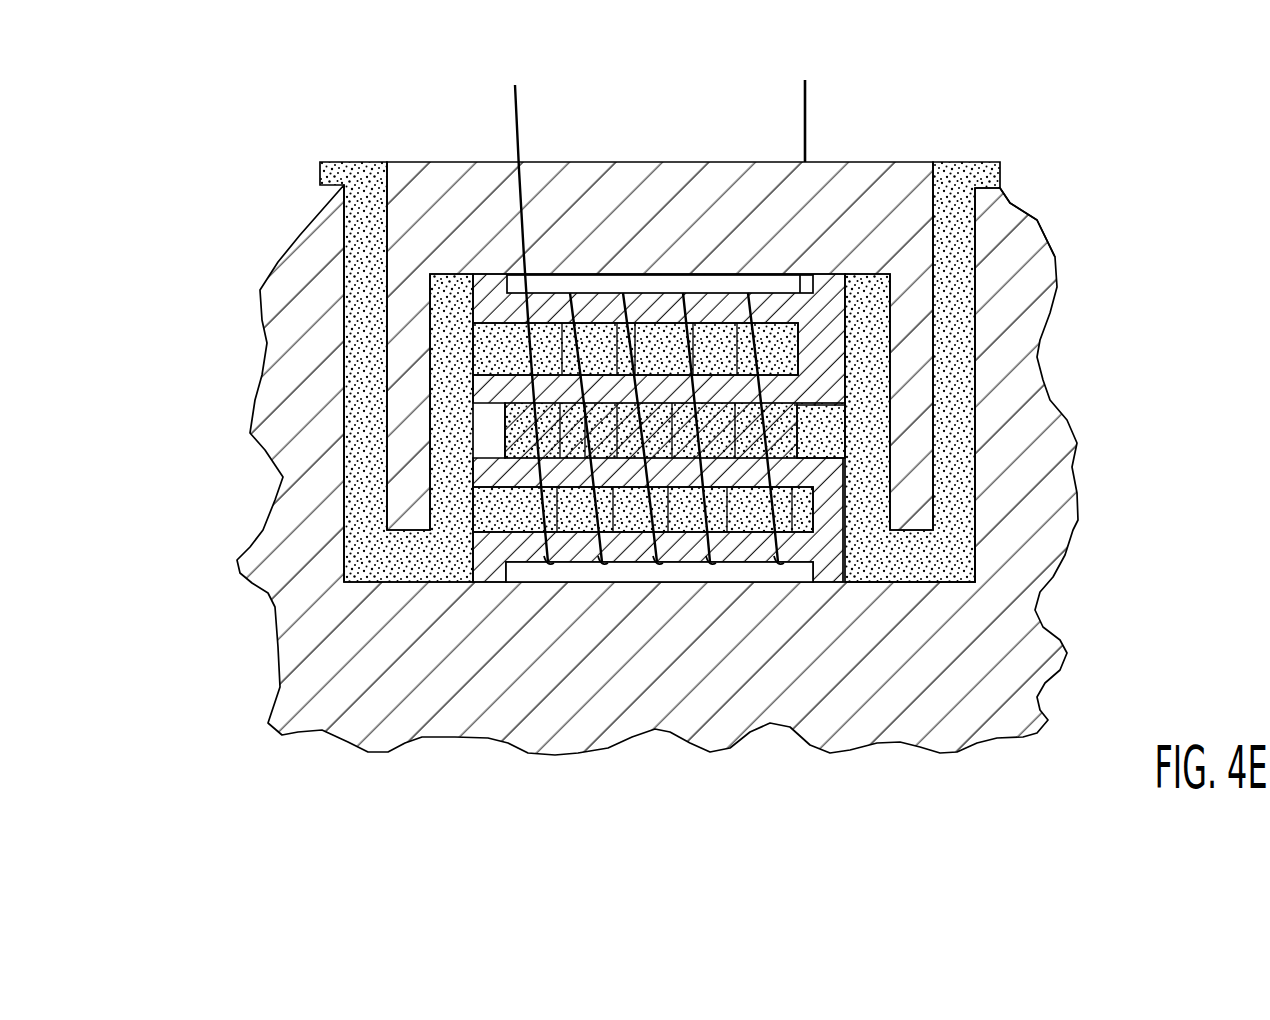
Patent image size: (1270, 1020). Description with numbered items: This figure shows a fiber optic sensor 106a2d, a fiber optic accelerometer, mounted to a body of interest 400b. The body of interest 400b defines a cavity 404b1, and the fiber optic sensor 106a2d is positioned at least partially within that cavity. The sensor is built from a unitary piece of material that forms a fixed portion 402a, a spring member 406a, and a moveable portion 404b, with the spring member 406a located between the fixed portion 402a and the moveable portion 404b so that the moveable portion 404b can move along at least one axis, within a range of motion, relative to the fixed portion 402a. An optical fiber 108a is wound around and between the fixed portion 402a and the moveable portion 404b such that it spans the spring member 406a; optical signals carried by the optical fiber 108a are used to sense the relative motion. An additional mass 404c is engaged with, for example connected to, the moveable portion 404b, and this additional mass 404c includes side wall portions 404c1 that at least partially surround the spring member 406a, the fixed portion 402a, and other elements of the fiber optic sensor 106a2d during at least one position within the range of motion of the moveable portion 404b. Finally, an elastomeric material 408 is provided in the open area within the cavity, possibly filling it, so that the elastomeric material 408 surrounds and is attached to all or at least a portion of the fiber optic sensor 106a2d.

The optical fiber 108a is at (513, 113).
The elastomeric material 408 is at (650, 345).
The moveable portion 404b is at (713, 300).
The additional mass 404c is at (862, 175).
The fiber optic sensor 106a2d is at (1128, 175).
The side wall portions 404c1 is at (403, 362).
The spring member 406a is at (803, 490).
The cavity 404b1 is at (982, 533).
The body of interest 400b is at (397, 711).
The fixed portion 402a is at (797, 563).